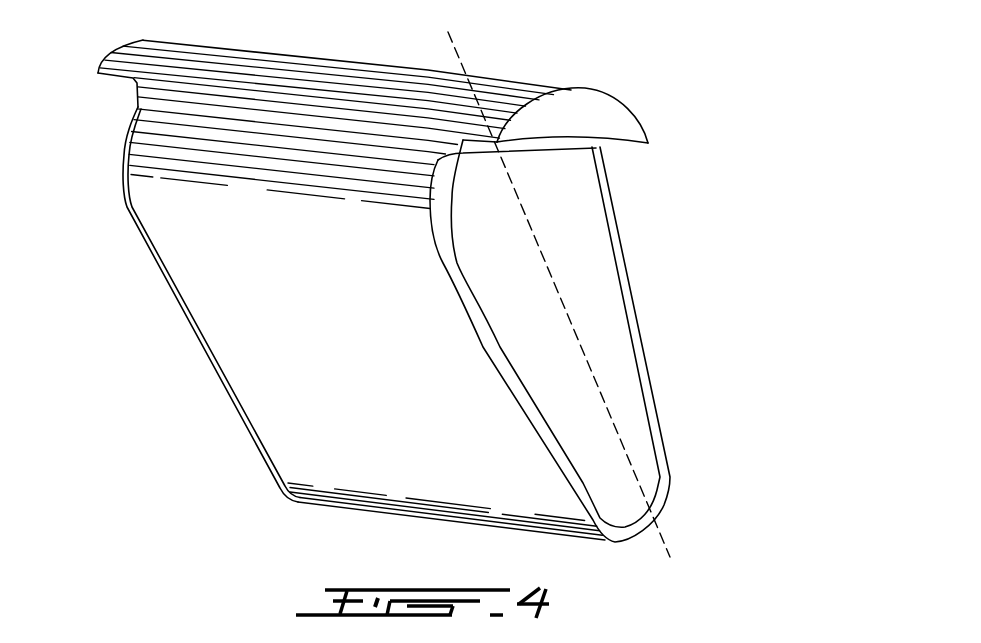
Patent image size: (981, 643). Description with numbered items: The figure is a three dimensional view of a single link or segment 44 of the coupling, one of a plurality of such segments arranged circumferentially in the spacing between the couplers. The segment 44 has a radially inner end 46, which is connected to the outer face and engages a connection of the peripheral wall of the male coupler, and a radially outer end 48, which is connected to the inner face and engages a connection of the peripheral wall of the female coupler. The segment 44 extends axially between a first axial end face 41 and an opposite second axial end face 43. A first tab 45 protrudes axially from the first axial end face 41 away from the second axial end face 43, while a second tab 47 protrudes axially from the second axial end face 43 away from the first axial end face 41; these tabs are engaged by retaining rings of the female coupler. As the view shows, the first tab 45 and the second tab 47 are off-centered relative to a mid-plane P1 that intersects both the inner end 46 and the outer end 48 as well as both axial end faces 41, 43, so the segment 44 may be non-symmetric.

The first axial end face 41 is at (163, 280).
The second axial end face 43 is at (582, 253).
The segment 44 is at (728, 127).
The first tab 45 is at (140, 66).
The radially inner end 46 is at (655, 518).
The second tab 47 is at (593, 118).
The radially outer end 48 is at (330, 82).
The mid-plane P1 is at (582, 352).